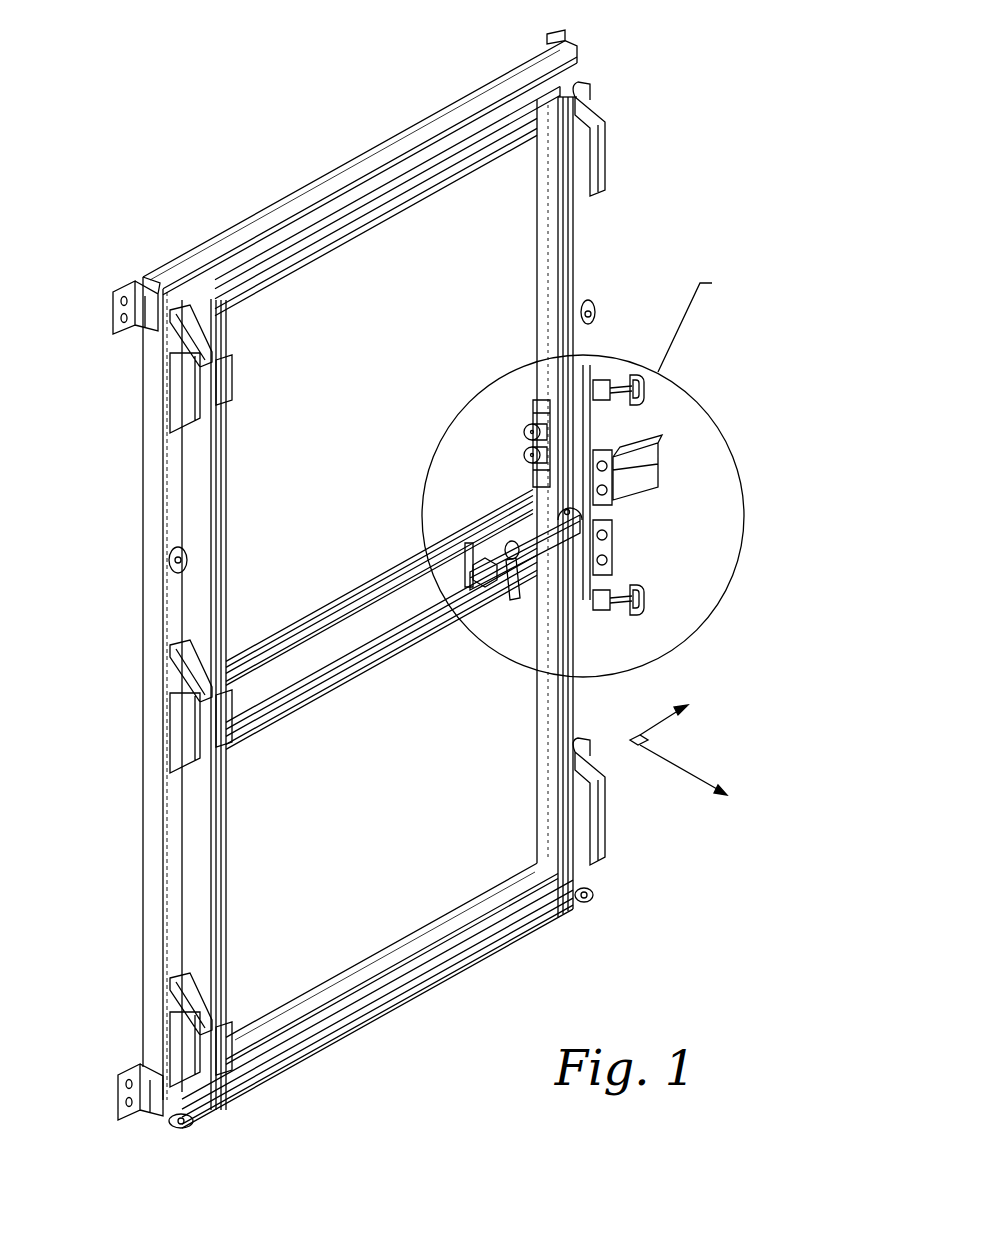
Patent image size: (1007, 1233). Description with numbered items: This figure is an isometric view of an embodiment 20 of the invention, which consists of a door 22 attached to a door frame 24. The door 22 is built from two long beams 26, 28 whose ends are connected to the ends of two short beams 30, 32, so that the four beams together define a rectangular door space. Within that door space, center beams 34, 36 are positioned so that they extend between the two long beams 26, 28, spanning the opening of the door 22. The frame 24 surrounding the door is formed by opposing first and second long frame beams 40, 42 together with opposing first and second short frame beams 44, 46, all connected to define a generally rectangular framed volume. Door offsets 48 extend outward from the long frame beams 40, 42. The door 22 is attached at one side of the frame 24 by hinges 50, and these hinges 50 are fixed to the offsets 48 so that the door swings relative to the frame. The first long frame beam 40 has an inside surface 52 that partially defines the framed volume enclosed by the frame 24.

The embodiment 20 is at (232, 119).
The door 22 is at (397, 1020).
The door frame 24 is at (525, 70).
The long beam 26 is at (574, 262).
The long beam 28 is at (226, 546).
The short beam 30 is at (364, 234).
The short beam 32 is at (452, 984).
The center beam 34 is at (386, 576).
The center beam 36 is at (386, 666).
The first long frame beam 40 is at (548, 237).
The second long frame beam 42 is at (165, 480).
The first short frame beam 44 is at (354, 166).
The second short frame beam 46 is at (398, 952).
The door offset 48 is at (183, 390).
The hinge 50 is at (230, 380).
The inside surface 52 is at (545, 290).